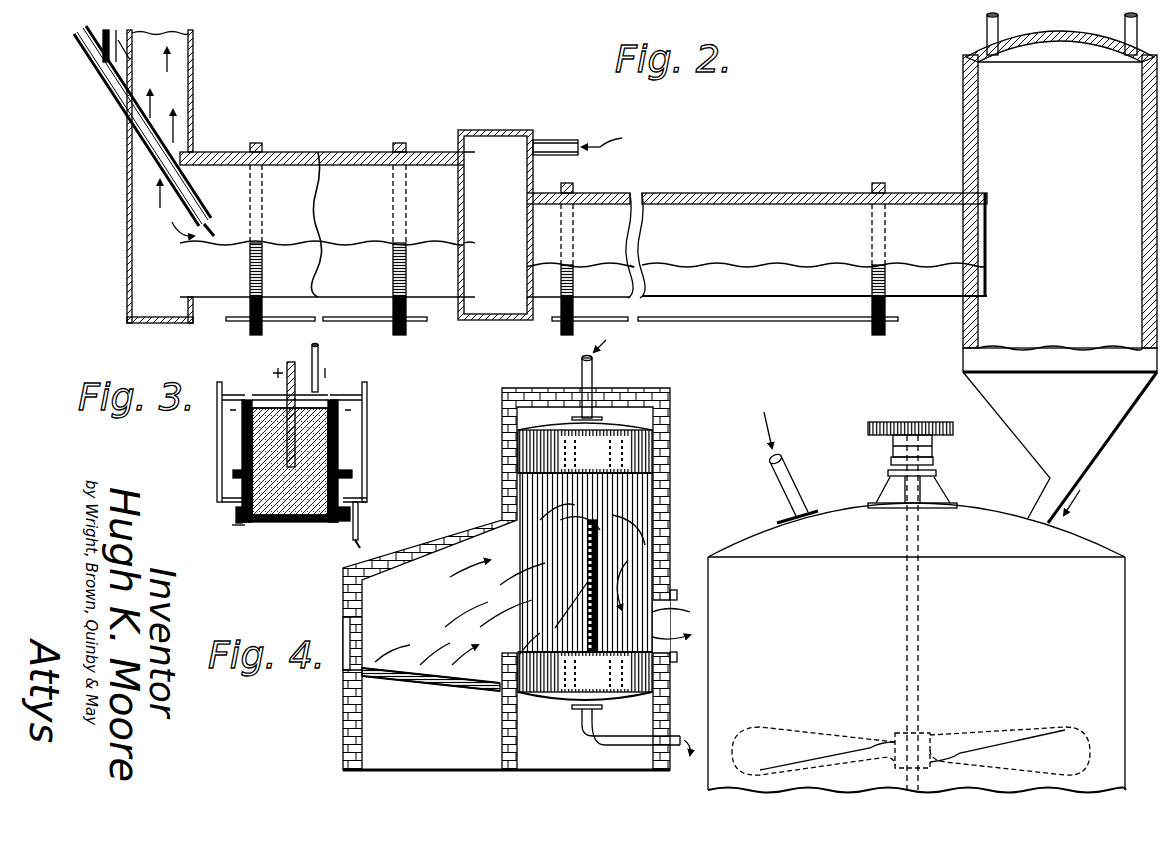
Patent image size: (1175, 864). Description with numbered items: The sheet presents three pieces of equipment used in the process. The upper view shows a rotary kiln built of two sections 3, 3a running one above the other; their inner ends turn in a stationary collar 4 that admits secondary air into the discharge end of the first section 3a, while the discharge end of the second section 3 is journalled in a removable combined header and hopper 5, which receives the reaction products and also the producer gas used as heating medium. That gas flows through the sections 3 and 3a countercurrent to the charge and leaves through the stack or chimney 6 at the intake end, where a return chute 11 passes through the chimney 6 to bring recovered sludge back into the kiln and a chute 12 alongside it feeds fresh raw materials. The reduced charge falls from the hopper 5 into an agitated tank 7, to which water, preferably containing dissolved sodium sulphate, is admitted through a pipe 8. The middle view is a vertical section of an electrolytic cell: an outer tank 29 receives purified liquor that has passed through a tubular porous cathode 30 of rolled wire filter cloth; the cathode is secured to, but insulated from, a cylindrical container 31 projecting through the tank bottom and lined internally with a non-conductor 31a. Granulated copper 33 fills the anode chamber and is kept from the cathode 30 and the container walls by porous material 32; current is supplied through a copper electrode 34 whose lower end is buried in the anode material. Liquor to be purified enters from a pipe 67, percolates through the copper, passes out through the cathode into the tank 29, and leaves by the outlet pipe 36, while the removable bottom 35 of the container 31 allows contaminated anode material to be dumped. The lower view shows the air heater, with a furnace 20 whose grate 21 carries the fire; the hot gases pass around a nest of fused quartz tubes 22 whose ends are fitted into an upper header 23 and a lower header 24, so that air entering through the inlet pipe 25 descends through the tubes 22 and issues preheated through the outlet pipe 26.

In FIG. 2, the chute 12 is at (115, 30).
In FIG. 2, the stack or chimney 6 is at (193, 72).
In FIG. 2, the return chute 11 is at (112, 104).
In FIG. 2, the first kiln section 3a is at (290, 153).
In FIG. 2, the stationary collar 4 is at (516, 131).
In FIG. 2, the second kiln section 3 is at (740, 194).
In FIG. 2, the combined header and hopper 5 is at (963, 100).
In FIG. 2, the agitated tank 7 is at (740, 544).
In FIG. 2, the pipe 8 is at (790, 460).
In FIG. 3, the outer tank 29 is at (367, 438).
In FIG. 3, the granulated copper 33 is at (340, 425).
In FIG. 3, the porous cathode 30 is at (245, 445).
In FIG. 3, the bottom 35 is at (292, 578).
In FIG. 3, the porous insulating material 32 is at (320, 515).
In FIG. 3, the copper electrode 34 is at (292, 362).
In FIG. 3, the pipe 67 is at (320, 360).
In FIG. 3, the cylindrical container 31 is at (240, 480).
In FIG. 3, the non-conductor lining 31a is at (340, 487).
In FIG. 3, the outlet pipe 36 is at (360, 527).
In FIG. 4, the furnace 20 is at (343, 712).
In FIG. 4, the grate 21 is at (420, 680).
In FIG. 4, the inlet pipe 25 is at (592, 375).
In FIG. 4, the upper header 23 is at (525, 445).
In FIG. 4, the fused quartz tubes 22 is at (647, 483).
In FIG. 4, the lower header 24 is at (540, 675).
In FIG. 4, the outlet pipe 26 is at (676, 735).